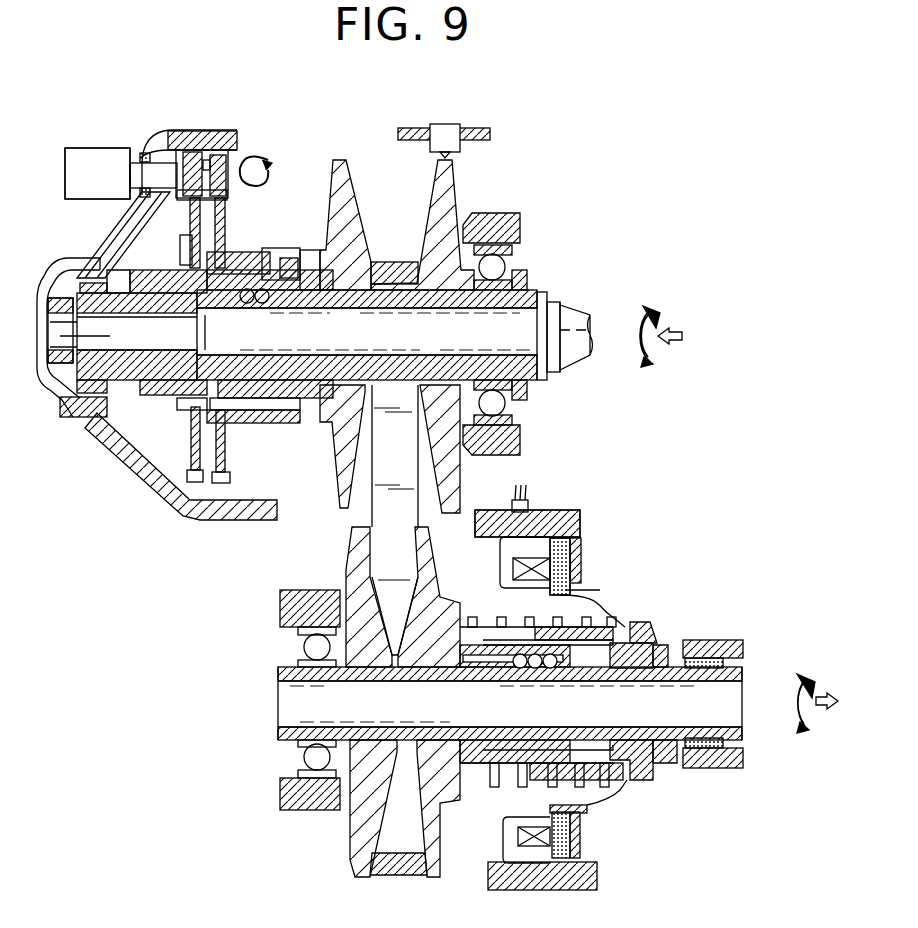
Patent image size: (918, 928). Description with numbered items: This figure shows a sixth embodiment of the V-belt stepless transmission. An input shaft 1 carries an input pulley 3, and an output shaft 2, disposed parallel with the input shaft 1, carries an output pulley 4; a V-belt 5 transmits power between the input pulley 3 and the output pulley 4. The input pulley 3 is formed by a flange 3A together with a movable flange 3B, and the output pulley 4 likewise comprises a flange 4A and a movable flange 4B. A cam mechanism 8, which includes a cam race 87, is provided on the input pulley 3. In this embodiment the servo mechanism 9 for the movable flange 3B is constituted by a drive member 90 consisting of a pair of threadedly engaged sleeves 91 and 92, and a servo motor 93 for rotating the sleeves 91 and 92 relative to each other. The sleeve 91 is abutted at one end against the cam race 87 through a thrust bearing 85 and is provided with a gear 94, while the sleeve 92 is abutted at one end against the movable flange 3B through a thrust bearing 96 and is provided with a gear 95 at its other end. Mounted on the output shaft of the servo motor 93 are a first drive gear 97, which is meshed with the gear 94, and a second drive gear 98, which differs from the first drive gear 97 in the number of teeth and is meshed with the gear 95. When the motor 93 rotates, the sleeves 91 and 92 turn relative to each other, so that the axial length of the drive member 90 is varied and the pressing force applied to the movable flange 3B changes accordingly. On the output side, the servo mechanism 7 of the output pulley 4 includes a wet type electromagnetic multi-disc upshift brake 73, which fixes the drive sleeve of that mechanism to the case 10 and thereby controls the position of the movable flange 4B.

The input shaft 1 is at (578, 320).
The output shaft 2 is at (735, 672).
The input pulley 3 is at (403, 182).
The fixed sheave of drive pulley 3A is at (452, 196).
The movable flange 3B is at (345, 192).
The output pulley 4 is at (343, 872).
The sheave of driven pulley 4A is at (350, 842).
The movable flange 4B is at (440, 850).
The V-belt 5 is at (393, 262).
The servo mechanism 7 is at (585, 532).
The cam mechanism 8 is at (126, 260).
The servo mechanism 9 is at (100, 142).
The case 10 is at (540, 522).
The wet type electromagnetic multi-disc upshift brake 73 is at (573, 577).
The thrust bearing 85 is at (223, 332).
The cam race 87 is at (175, 296).
The drive member 90 is at (266, 248).
The sleeve 91 is at (240, 262).
The sleeve 92 is at (284, 256).
The servo motor 93 is at (121, 173).
The gear 94 is at (188, 240).
The gear 95 is at (226, 214).
The thrust bearing 96 is at (316, 255).
The first drive gear 97 is at (190, 150).
The second drive gear 98 is at (220, 153).